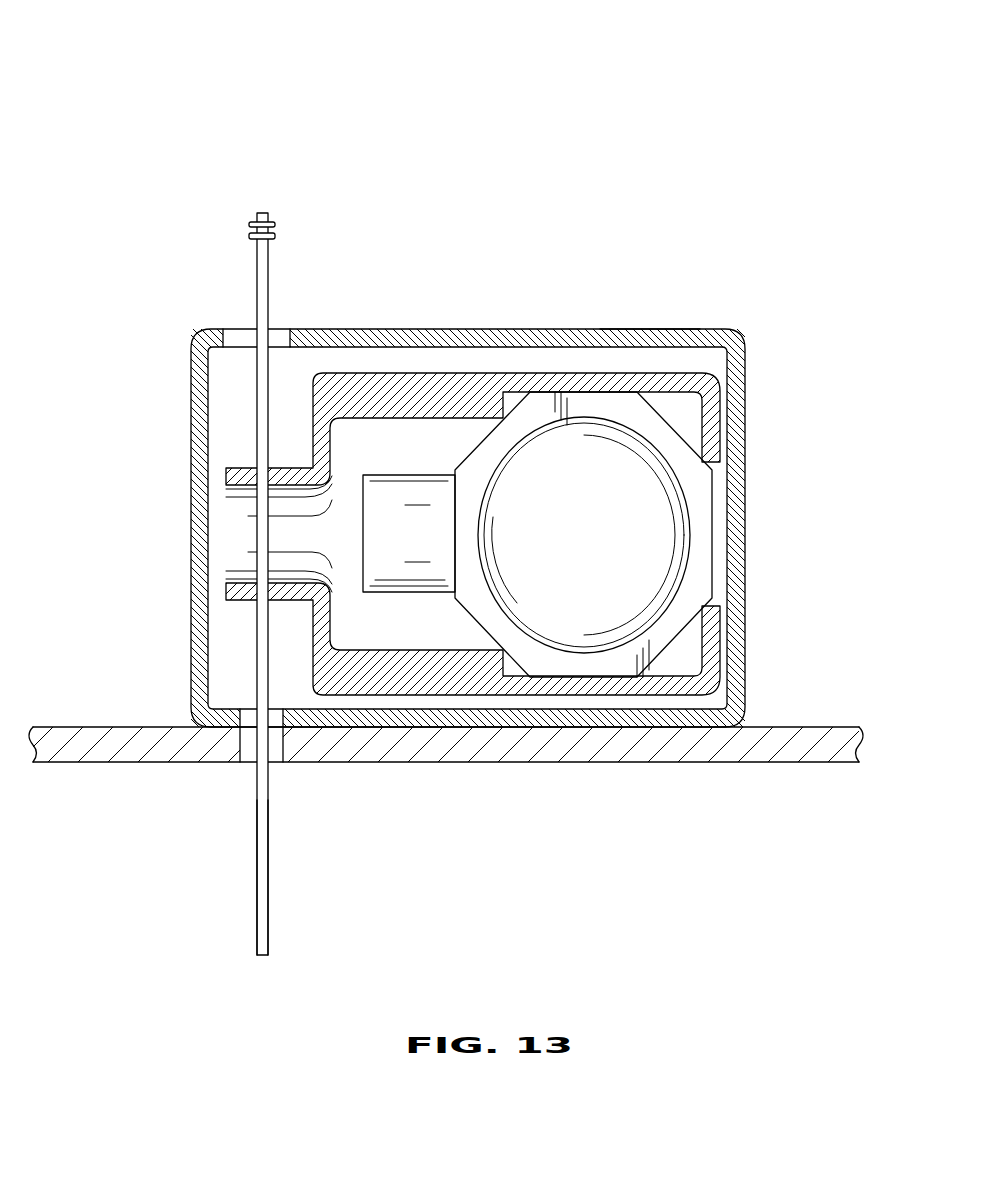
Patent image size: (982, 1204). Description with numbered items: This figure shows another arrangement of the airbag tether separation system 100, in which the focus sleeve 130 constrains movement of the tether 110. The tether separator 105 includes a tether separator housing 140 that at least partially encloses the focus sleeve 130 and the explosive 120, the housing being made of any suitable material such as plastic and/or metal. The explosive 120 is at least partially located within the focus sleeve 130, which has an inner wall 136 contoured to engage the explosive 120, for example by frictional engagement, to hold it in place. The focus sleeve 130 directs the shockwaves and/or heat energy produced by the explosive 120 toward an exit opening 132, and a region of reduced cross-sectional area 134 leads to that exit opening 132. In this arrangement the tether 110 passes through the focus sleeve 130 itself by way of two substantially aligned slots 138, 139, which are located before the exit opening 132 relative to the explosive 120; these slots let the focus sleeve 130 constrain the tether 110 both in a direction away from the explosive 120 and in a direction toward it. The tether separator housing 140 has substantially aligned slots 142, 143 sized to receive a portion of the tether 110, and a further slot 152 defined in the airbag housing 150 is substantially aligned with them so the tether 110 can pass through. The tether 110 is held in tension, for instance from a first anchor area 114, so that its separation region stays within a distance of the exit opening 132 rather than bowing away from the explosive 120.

The airbag tether separation system 100 is at (170, 38).
The tether separator 105 is at (662, 308).
The tether 110 is at (257, 287).
The first anchor area 114 is at (243, 215).
The explosive 120 is at (660, 413).
The focus sleeve 130 is at (500, 373).
The exit opening 132 is at (220, 522).
The region of reduced cross-sectional area 134 is at (297, 467).
The inner wall 136 is at (673, 672).
The slot 138 is at (253, 468).
The slot 139 is at (253, 600).
The tether separator housing 140 is at (745, 643).
The slot 142 is at (235, 318).
The slot 143 is at (277, 722).
The airbag housing 150 is at (797, 762).
The slot 152 is at (277, 790).